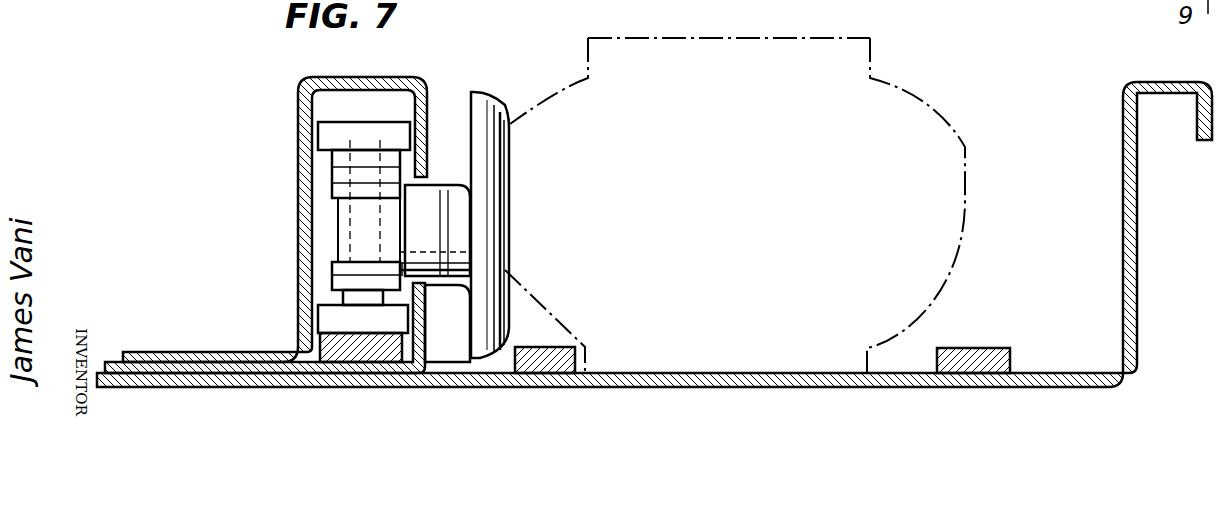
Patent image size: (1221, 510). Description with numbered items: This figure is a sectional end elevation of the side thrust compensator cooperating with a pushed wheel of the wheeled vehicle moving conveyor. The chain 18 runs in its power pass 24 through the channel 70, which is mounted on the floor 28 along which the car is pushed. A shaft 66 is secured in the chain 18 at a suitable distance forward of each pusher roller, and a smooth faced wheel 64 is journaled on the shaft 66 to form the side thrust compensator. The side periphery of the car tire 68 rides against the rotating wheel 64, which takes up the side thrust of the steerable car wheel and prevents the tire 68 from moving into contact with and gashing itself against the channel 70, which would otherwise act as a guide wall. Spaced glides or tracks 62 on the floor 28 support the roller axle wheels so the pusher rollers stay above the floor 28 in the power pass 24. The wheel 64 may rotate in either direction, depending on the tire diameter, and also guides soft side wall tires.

The chain 18 is at (337, 283).
The power pass 24 is at (328, 219).
The floor 28 is at (778, 373).
The glides or tracks 62 is at (545, 347).
The smooth faced wheel 64 is at (487, 122).
The shaft 66 is at (427, 197).
The car tire 68 is at (542, 284).
The channel 70 is at (430, 108).